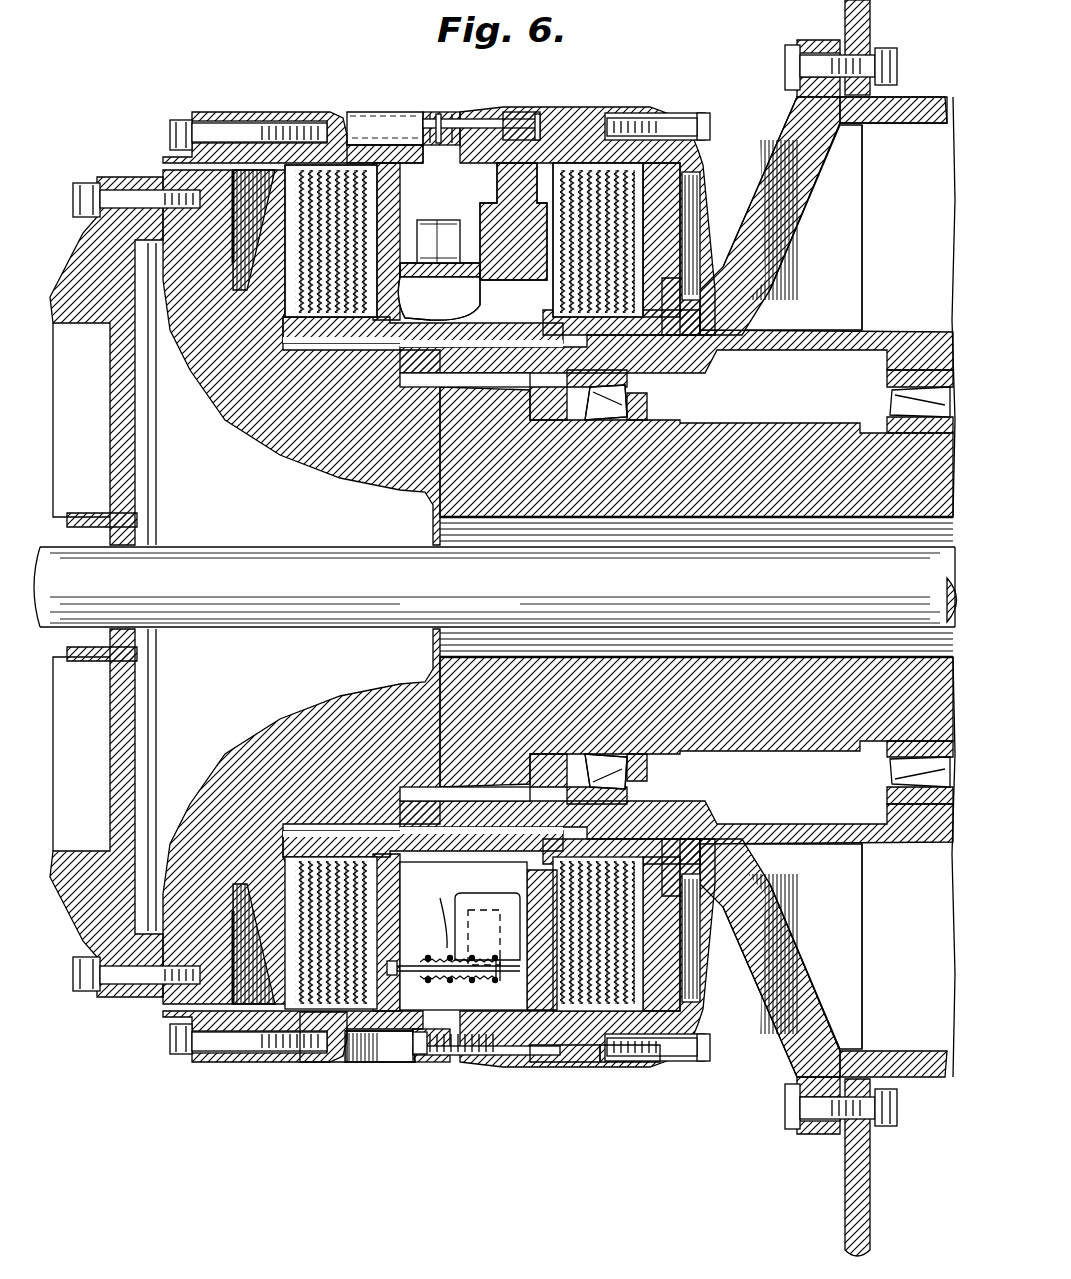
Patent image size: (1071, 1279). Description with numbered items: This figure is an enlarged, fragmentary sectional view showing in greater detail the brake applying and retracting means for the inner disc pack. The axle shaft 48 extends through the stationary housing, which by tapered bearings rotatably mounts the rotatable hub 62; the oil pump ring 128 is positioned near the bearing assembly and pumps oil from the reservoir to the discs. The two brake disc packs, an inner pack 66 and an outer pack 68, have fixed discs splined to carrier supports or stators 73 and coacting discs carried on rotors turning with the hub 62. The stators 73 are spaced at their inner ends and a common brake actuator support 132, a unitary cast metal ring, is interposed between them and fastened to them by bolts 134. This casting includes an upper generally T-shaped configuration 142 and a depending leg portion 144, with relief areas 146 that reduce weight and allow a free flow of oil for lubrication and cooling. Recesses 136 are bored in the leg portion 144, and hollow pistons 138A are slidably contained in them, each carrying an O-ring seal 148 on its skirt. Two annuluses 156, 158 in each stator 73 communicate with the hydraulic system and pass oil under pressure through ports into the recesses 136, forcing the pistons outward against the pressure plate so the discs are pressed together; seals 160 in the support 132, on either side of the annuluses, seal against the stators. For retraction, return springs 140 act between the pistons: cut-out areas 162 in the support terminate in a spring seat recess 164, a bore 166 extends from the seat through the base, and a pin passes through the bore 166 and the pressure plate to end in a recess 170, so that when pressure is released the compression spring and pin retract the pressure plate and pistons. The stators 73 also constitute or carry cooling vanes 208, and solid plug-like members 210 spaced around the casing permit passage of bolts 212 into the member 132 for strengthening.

The axle shaft 48 is at (364, 587).
The rotatable hub 62 is at (764, 196).
The inner brake disc pack 66 is at (343, 158).
The outer brake disc pack 68 is at (581, 162).
The carrier supports or stators 73 is at (320, 112).
The oil pump ring 128 is at (640, 405).
The common brake actuator support 132 is at (489, 1058).
The bolts 134 is at (487, 124).
The recesses 136 is at (402, 294).
The pistons 138A is at (456, 266).
The return springs 140 is at (450, 945).
The upper T shaped configuration 142 is at (447, 128).
The depending leg portion 144 is at (453, 243).
The relief openings or areas 146 is at (408, 162).
The seals 148 is at (446, 278).
The annulus 156 is at (436, 128).
The annulus 158 is at (515, 126).
The seals 160 is at (440, 126).
The cut out areas 162 is at (503, 917).
The spring seat recess 164 is at (420, 1058).
The bore 166 is at (390, 962).
The recesses 170 is at (342, 1062).
The cooling vanes 208 is at (388, 1056).
The plug like members 210 is at (541, 1064).
The bolts 212 is at (609, 1064).